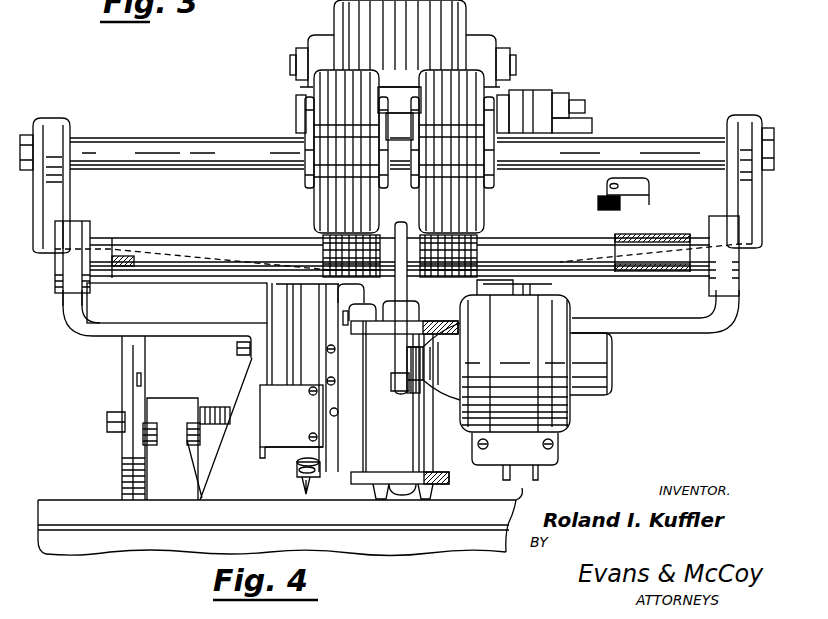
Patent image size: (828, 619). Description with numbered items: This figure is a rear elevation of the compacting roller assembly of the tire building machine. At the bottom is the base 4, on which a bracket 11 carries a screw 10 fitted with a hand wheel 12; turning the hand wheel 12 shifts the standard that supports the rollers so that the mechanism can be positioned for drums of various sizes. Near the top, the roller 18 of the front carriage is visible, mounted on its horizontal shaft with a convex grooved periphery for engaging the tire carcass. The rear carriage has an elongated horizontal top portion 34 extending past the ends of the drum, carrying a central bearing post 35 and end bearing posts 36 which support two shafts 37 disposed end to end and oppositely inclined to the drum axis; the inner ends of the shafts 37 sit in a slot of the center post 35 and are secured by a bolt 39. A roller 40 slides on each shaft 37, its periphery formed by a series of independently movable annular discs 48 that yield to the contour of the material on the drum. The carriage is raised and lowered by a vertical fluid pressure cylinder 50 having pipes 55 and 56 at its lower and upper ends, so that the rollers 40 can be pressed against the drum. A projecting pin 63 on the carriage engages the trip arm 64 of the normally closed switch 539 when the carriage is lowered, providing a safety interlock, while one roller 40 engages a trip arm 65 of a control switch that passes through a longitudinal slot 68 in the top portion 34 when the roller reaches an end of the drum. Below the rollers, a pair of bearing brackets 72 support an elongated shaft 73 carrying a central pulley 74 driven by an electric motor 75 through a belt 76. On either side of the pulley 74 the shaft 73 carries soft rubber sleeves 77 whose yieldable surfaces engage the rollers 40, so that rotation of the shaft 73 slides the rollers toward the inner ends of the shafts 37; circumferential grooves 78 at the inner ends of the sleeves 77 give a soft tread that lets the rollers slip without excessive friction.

The base 4 is at (128, 545).
The screw 10 is at (220, 410).
The bracket 11 is at (185, 485).
The hand wheel 12 is at (127, 472).
The roller 18 is at (463, 18).
The top portion 34 is at (180, 182).
The central bearing post 35 is at (296, 127).
The bearing posts 36 is at (53, 125).
The shafts 37 is at (145, 145).
The bolt 39 is at (390, 102).
The roller 40 is at (309, 197).
The annular discs 48 is at (318, 63).
The fluid pressure cylinder 50 is at (428, 455).
The pipe 55 is at (391, 479).
The pipe 56 is at (343, 314).
The projecting pin 63 is at (320, 373).
The trip arm 64 is at (343, 407).
The trip arm 65 is at (645, 184).
The longitudinal slot 68 is at (649, 206).
The bearing brackets 72 is at (97, 331).
The shaft 73 is at (98, 243).
The pulley 74 is at (385, 232).
The electric motor 75 is at (570, 413).
The belt 76 is at (401, 296).
The sleeves 77 is at (167, 244).
The circumferential grooves 78 is at (330, 265).
The switch 539 is at (319, 455).